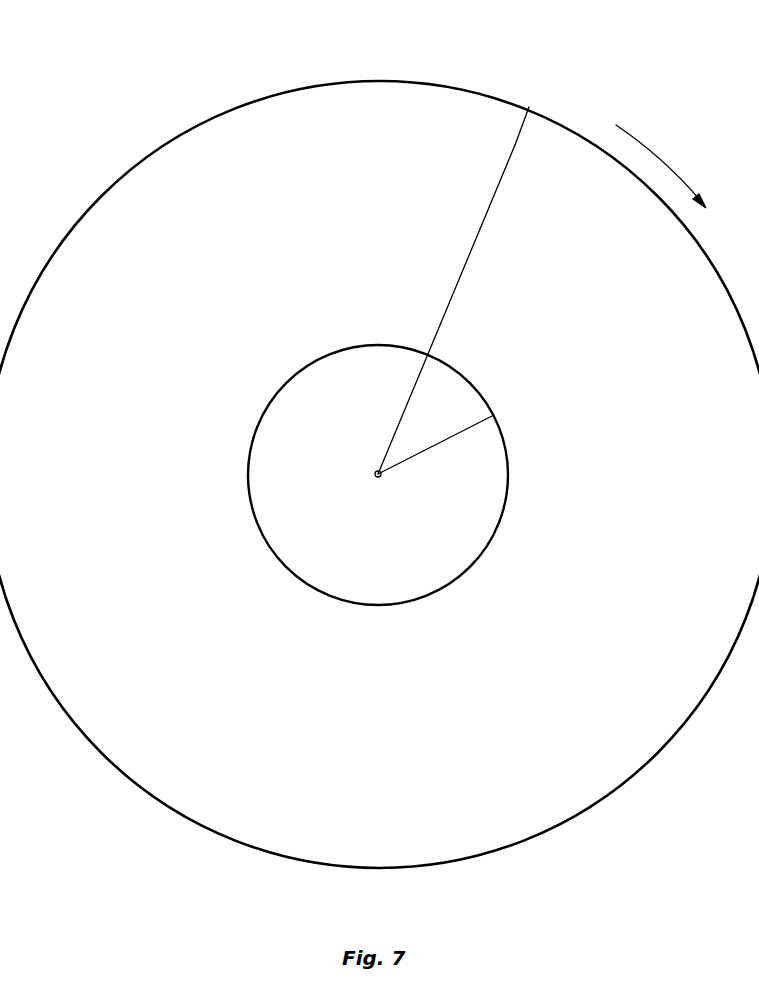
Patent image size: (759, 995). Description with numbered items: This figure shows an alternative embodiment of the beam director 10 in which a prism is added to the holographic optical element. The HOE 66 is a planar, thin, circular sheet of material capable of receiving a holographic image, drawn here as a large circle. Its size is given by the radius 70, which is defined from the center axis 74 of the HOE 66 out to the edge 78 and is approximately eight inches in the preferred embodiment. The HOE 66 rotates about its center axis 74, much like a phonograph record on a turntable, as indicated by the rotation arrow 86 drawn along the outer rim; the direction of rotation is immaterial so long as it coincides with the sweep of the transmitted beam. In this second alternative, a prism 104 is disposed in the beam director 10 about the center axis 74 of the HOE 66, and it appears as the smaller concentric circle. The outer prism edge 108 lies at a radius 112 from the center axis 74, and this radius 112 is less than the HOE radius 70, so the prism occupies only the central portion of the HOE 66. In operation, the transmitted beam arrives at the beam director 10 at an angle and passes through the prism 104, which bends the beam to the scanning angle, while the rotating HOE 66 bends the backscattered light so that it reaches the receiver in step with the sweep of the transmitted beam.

The beam director 10 is at (116, 79).
The HOE 66 is at (355, 95).
The radius 70 is at (478, 236).
The center axis 74 is at (371, 480).
The edge 78 is at (531, 105).
The rotation arrow 86 is at (660, 160).
The prism 104 is at (458, 511).
The outer prism edge 108 is at (495, 418).
The radius 112 is at (416, 447).